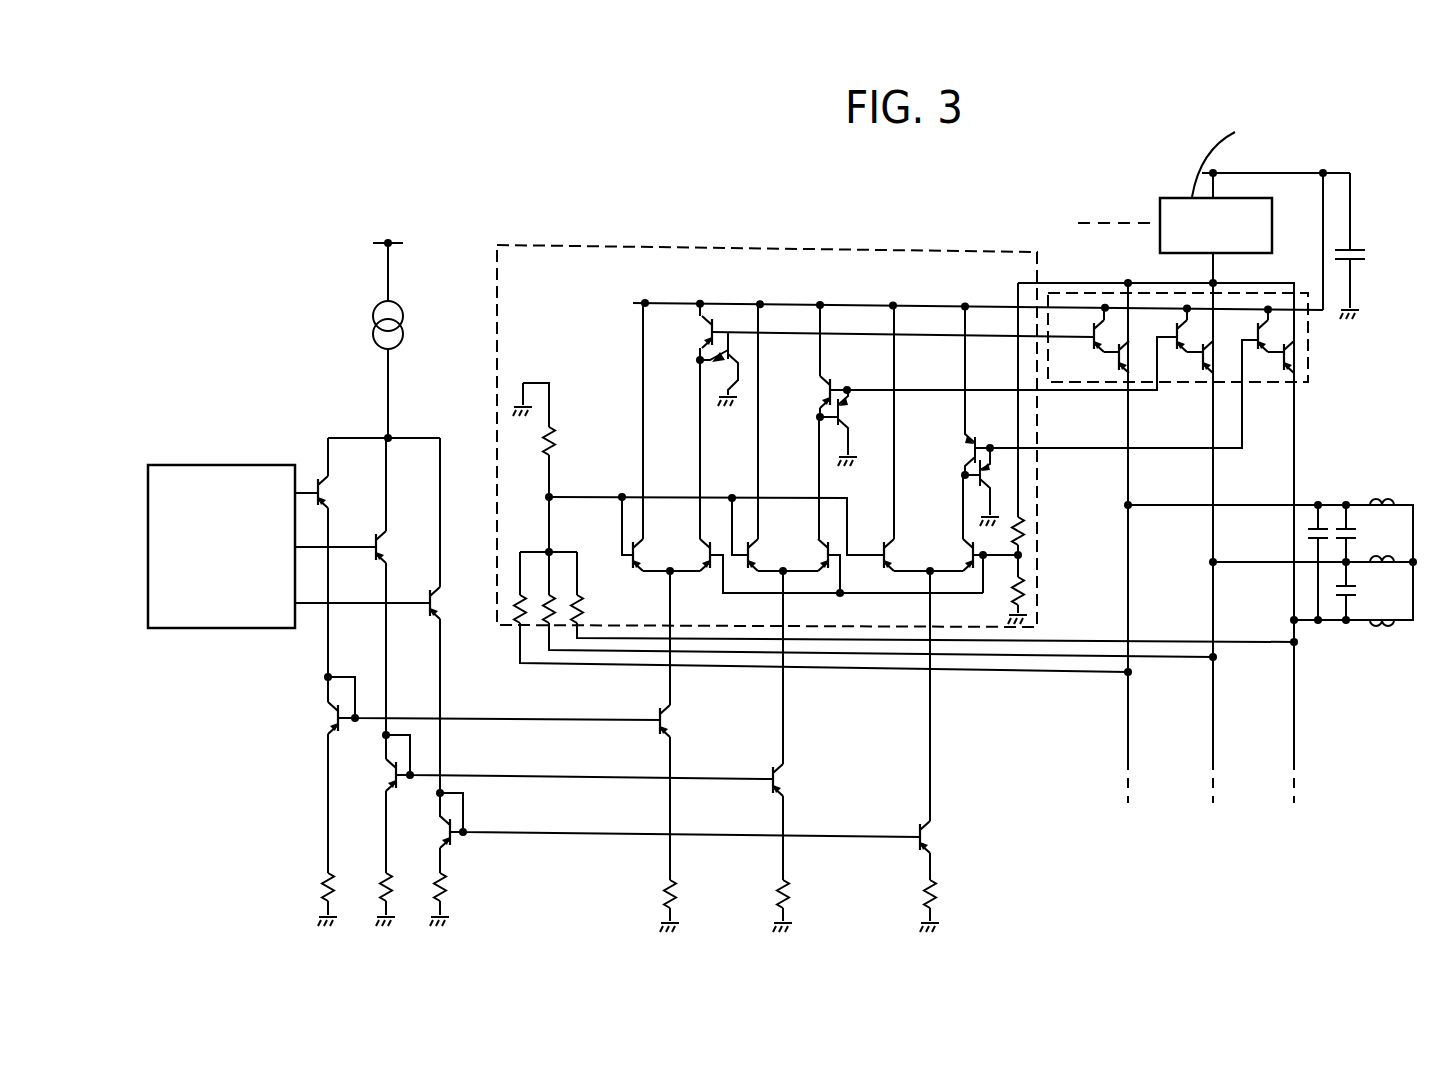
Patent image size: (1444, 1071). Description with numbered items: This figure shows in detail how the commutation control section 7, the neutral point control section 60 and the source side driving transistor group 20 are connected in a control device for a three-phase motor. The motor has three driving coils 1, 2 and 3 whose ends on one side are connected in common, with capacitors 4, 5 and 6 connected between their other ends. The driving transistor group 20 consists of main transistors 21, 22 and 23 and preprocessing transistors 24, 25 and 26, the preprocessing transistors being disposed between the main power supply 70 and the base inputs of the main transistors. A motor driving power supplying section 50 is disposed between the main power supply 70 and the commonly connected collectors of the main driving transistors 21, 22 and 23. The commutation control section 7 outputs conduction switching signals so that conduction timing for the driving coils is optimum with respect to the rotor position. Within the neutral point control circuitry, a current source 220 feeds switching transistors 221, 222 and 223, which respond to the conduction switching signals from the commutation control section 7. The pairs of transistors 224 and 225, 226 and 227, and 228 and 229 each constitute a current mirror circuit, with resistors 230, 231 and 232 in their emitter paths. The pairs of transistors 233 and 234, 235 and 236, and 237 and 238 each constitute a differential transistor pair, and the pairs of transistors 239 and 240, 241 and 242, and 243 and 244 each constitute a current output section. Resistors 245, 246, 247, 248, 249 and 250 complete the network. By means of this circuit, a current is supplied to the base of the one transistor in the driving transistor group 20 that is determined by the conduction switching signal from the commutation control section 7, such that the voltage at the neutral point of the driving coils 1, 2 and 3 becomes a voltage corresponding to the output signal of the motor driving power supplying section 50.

The driving coil 1 is at (1383, 500).
The driving coil 2 is at (1383, 558).
The driving coil 3 is at (1383, 626).
The capacitor 4 is at (1352, 525).
The capacitor 5 is at (1358, 590).
The capacitor 6 is at (1312, 532).
The commutation control section 7 is at (218, 465).
The source side driving transistor group 20 is at (1308, 360).
The main transistor 21 is at (1116, 358).
The main transistor 22 is at (1200, 355).
The main transistor 23 is at (1281, 357).
The preprocessing transistor 24 is at (1092, 325).
The preprocessing transistor 25 is at (1175, 328).
The preprocessing transistor 26 is at (1256, 327).
The motor driving power supplying section 50 is at (1182, 197).
The neutral point control section 60 is at (937, 242).
The main power supply 70 is at (1363, 242).
The current source 220 is at (375, 308).
The switching transistor 221 is at (318, 482).
The switching transistor 222 is at (376, 537).
The switching transistor 223 is at (430, 592).
The transistor 224 is at (328, 719).
The transistor 225 is at (656, 731).
The transistor 226 is at (383, 777).
The transistor 227 is at (770, 772).
The transistor 228 is at (452, 845).
The transistor 229 is at (917, 827).
The resistor 230 is at (664, 890).
The resistor 231 is at (777, 893).
The resistor 232 is at (924, 893).
The transistor 233 is at (630, 566).
The transistor 234 is at (708, 572).
The transistor 235 is at (750, 556).
The transistor 236 is at (828, 568).
The transistor 237 is at (886, 548).
The transistor 238 is at (966, 556).
The transistor 239 is at (700, 330).
The transistor 240 is at (736, 355).
The transistor 241 is at (828, 398).
The transistor 242 is at (852, 420).
The transistor 243 is at (974, 446).
The transistor 244 is at (988, 478).
The resistor 245 is at (1023, 527).
The resistor 246 is at (1022, 590).
The resistor 247 is at (555, 440).
The resistor 248 is at (516, 606).
The resistor 249 is at (545, 608).
The resistor 250 is at (578, 608).